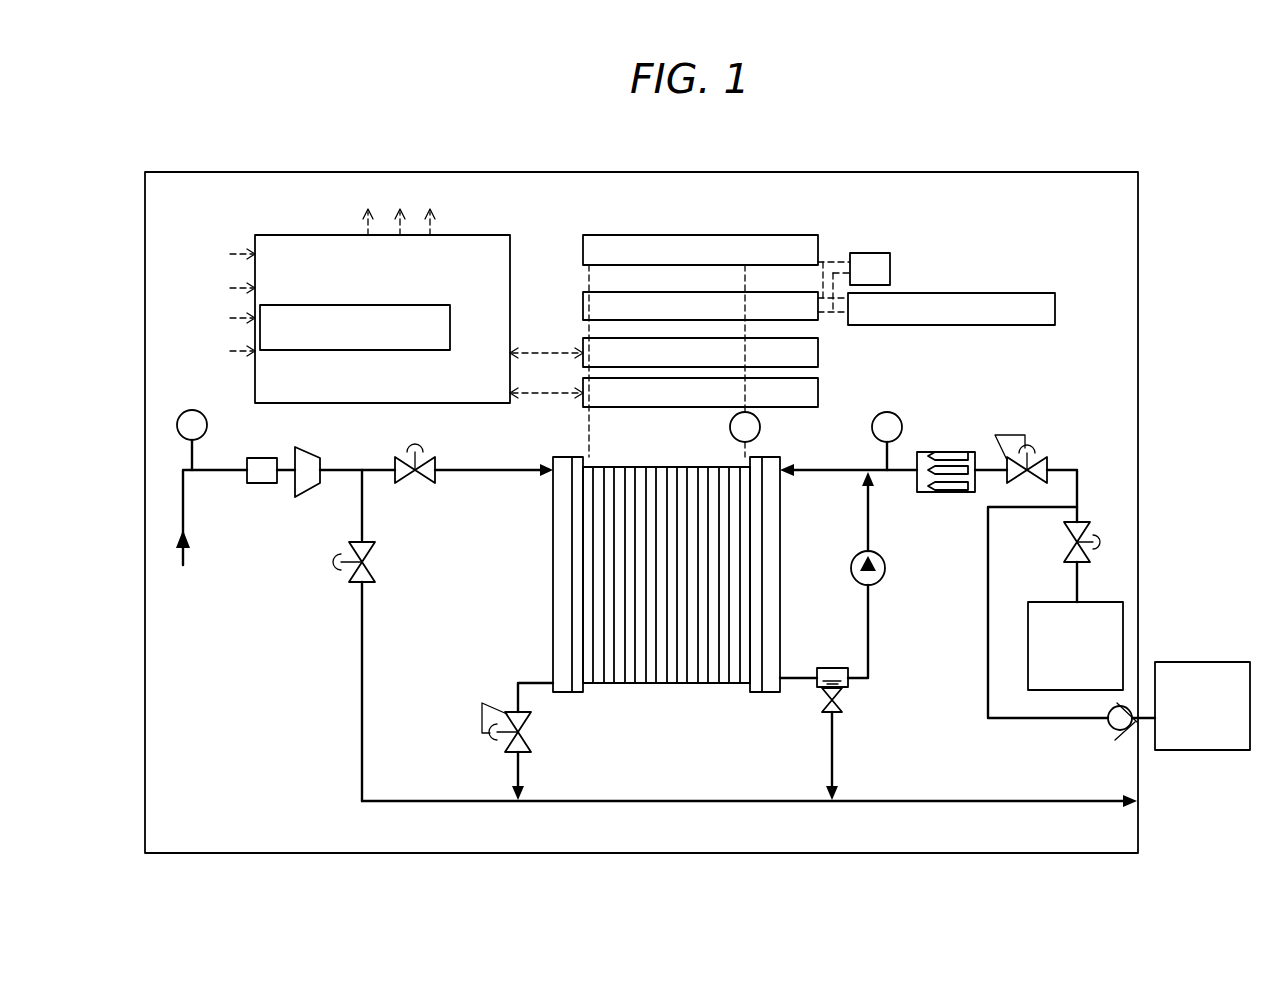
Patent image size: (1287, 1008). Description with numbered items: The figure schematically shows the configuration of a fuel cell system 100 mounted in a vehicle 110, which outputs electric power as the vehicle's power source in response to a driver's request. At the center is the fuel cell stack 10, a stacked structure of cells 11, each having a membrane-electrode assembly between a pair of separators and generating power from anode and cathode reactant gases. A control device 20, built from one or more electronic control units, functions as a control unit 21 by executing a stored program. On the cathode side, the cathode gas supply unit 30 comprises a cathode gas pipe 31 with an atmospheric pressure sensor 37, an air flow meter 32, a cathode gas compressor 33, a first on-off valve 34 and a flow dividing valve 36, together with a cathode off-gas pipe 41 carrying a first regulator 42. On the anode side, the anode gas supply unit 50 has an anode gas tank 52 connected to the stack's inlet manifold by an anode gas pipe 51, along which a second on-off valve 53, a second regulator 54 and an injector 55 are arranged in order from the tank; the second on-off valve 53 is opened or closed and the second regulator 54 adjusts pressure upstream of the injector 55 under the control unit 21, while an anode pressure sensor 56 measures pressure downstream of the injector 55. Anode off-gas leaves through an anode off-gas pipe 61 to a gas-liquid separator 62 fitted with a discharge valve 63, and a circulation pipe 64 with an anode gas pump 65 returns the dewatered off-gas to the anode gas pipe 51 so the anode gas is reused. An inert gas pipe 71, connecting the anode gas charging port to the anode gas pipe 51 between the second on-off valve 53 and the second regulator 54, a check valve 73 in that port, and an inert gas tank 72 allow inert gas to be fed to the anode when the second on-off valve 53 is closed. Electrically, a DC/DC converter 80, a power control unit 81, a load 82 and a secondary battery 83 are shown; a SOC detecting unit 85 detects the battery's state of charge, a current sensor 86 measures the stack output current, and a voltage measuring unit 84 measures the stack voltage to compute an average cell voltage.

The fuel cell stack 10 is at (673, 607).
The cell 11 is at (693, 688).
The control device 20 is at (389, 291).
The control unit 21 is at (450, 322).
The cathode gas supply unit 30 is at (289, 720).
The cathode gas pipe 31 is at (185, 502).
The air flow meter 32 is at (262, 457).
The cathode gas compressor 33 is at (305, 447).
The first on-off valve 34 is at (434, 457).
The flow dividing valve 36 is at (347, 576).
The atmospheric pressure sensor 37 is at (197, 412).
The cathode off-gas pipe 41 is at (660, 802).
The first regulator 42 is at (483, 735).
The anode gas supply unit 50 is at (999, 745).
The anode gas pipe 51 is at (1080, 492).
The anode gas tank 52 is at (1097, 602).
The second on-off valve 53 is at (1065, 550).
The second regulator 54 is at (1050, 460).
The injector 55 is at (951, 438).
The anode pressure sensor 56 is at (902, 418).
The anode off-gas pipe 61 is at (797, 684).
The gas-liquid separator 62 is at (850, 687).
The discharge valve 63 is at (845, 712).
The circulation pipe 64 is at (866, 628).
The anode gas pump 65 is at (852, 565).
The inert gas pipe 71 is at (987, 593).
The inert gas tank 72 is at (1220, 662).
The check valve 73 is at (1108, 725).
The DC/DC converter 80 is at (818, 355).
The power control unit 81 is at (778, 292).
The load 82 is at (778, 235).
The secondary battery 83 is at (1055, 310).
The voltage measuring unit 84 is at (818, 395).
The SOC detecting unit 85 is at (870, 269).
The current sensor 86 is at (730, 427).
The fuel cell system 100 is at (1046, 252).
The vehicle 110 is at (1105, 172).